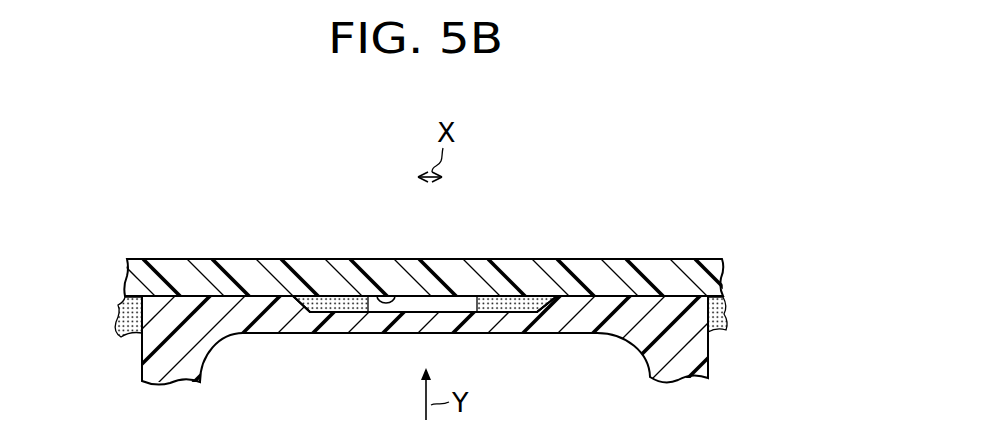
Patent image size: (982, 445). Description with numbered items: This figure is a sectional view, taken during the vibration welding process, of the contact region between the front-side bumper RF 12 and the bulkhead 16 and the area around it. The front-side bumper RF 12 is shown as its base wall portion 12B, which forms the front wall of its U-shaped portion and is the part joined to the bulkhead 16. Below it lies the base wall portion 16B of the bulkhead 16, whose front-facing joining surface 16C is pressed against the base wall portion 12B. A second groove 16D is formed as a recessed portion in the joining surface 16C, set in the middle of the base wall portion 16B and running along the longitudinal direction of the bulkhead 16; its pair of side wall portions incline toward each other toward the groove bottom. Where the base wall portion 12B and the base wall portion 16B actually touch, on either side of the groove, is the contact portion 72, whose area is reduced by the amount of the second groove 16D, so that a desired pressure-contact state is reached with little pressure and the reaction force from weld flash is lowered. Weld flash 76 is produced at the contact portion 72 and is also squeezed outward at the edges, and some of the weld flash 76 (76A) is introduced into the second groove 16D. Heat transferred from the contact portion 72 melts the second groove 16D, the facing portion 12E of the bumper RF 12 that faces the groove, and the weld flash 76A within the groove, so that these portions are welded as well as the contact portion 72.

The front-side bumper RF 12 is at (571, 252).
The base wall portion 12B is at (242, 258).
The facing portion 12E is at (385, 295).
The bulkhead 16 is at (722, 362).
The base wall portion 16B is at (560, 333).
The joining surface 16C is at (278, 290).
The second groove 16D is at (418, 308).
The contact portion 72 is at (197, 293).
The weld flash 76 is at (118, 312).
The weld flash in the second groove 76A is at (328, 297).